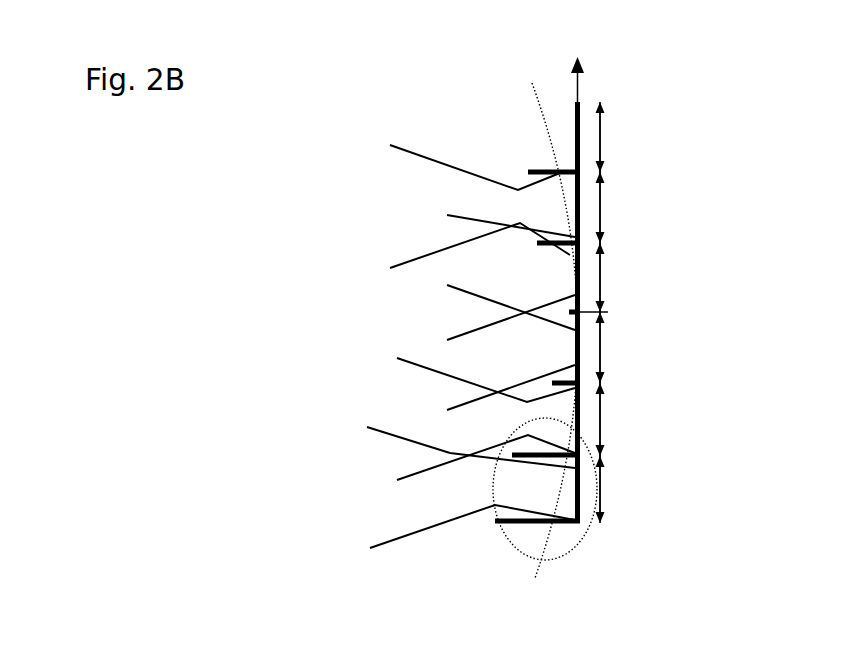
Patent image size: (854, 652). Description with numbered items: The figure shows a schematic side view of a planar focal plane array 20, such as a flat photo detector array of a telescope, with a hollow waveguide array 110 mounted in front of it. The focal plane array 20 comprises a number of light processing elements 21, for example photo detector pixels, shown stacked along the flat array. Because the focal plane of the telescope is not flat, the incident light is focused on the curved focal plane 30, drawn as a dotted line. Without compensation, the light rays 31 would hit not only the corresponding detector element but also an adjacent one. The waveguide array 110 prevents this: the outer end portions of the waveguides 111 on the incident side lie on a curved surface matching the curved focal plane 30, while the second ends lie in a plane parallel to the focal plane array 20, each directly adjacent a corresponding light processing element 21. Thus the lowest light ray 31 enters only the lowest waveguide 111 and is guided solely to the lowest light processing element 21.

The hollow waveguide array 110 is at (508, 159).
The waveguide 111 is at (560, 204).
The focal plane array 20 is at (648, 105).
The light processing element 21 is at (618, 133).
The curved focal plane 30 is at (538, 70).
The light ray 31 is at (388, 165).